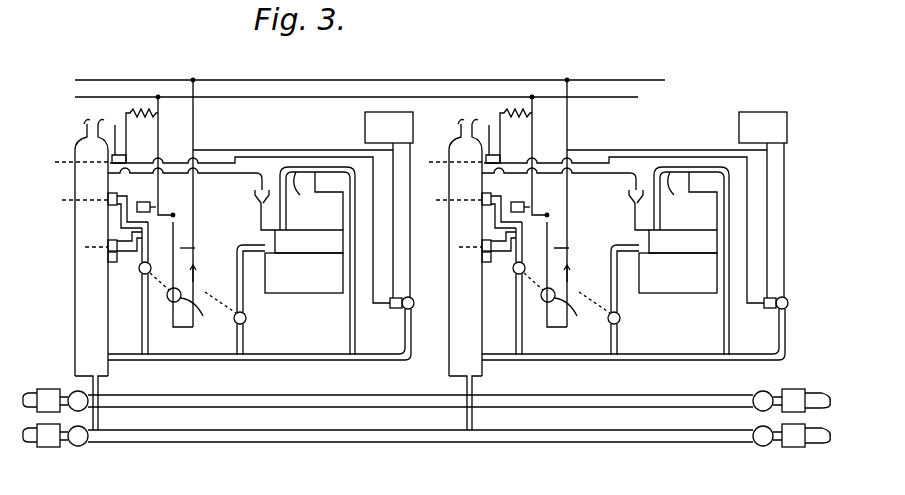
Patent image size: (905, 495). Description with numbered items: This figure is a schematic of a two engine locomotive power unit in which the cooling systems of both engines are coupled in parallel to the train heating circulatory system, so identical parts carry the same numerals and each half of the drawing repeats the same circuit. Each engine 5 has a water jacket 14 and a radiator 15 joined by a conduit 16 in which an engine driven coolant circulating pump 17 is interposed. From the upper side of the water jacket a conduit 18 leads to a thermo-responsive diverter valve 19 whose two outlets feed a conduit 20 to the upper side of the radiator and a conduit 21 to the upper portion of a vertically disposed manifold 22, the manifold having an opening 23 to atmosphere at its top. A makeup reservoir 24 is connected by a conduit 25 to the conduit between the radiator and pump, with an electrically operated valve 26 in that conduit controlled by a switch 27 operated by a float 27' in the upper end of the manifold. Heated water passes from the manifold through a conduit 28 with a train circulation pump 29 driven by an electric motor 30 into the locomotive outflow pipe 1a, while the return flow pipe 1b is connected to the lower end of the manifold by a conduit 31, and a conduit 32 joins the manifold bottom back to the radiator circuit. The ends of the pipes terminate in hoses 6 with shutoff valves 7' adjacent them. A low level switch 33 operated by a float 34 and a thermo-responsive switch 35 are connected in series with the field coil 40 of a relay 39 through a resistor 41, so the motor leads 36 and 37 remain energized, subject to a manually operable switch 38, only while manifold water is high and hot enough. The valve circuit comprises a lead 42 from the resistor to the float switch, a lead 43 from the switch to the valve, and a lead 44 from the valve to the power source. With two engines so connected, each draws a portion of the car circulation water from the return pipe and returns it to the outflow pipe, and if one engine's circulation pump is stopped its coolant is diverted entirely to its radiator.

The outflow pipe 1a is at (668, 396).
The return flow pipe 1b is at (622, 442).
The internal combustion engine 5 is at (308, 290).
The hose 6 is at (35, 391).
The shutoff valve 7' is at (428, 424).
The water jacket 14 is at (300, 249).
The radiator 15 is at (323, 186).
The conduit 16 is at (247, 320).
The coolant circulating pump 17 is at (199, 296).
The conduit 18 is at (260, 226).
The thermo-responsive diverter valve 19 is at (276, 205).
The conduit 20 is at (302, 194).
The conduit 21 is at (237, 178).
The manifold 22 is at (85, 338).
The opening 23 is at (87, 131).
The makeup reservoir 24 is at (380, 134).
The conduit 25 is at (400, 362).
The electrically operated valve 26 is at (400, 309).
The switch 27 is at (109, 133).
The float 27' is at (71, 173).
The conduit 28 is at (142, 256).
The train circulation pump 29 is at (147, 281).
The electric motor 30 is at (204, 275).
The conduit 31 is at (100, 414).
The conduit 32 is at (225, 362).
The low level switch 33 is at (108, 199).
The float 34 is at (108, 207).
The thermo-responsive switch 35 is at (108, 258).
The lead 36 is at (195, 214).
The lead 37 is at (195, 250).
The manually operable switch 38 is at (197, 268).
The relay 39 is at (143, 202).
The field coil 40 is at (137, 208).
The resistor 41 is at (140, 112).
The lead 42 is at (133, 140).
The lead 43 is at (258, 157).
The lead 44 is at (310, 150).